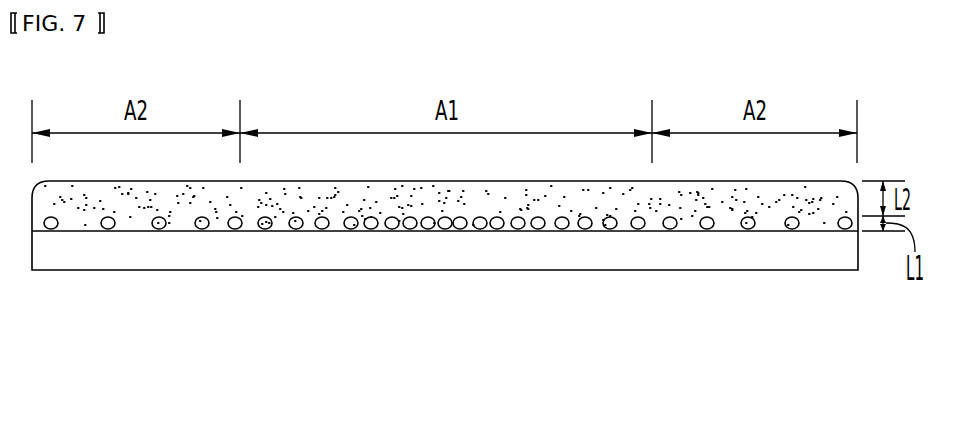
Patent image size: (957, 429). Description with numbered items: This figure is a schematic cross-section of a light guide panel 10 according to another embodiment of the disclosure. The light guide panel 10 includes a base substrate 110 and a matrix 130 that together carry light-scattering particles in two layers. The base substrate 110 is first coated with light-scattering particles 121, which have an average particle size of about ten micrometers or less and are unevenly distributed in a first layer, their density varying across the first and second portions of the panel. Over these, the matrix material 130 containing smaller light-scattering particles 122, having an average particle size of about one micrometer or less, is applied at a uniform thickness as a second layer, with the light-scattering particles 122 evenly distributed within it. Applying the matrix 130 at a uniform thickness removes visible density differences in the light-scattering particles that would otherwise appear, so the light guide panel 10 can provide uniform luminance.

The light guide panel 10 is at (445, 283).
The base substrate 110 is at (202, 248).
The light-scattering particles 121 is at (323, 233).
The light-scattering particles 122 is at (67, 200).
The matrix 130 is at (445, 263).